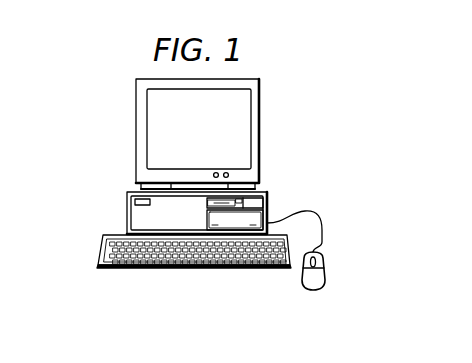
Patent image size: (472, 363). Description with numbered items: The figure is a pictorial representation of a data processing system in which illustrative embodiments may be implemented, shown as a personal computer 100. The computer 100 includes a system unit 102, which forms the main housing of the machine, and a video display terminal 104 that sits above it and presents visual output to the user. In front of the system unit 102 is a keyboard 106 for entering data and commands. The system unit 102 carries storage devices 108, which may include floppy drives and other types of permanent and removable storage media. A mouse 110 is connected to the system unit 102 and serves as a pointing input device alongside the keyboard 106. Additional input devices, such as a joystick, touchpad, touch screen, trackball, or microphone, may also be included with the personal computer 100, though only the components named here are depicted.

The computer 100 is at (82, 120).
The system unit 102 is at (127, 210).
The video display terminal 104 is at (260, 128).
The keyboard 106 is at (120, 268).
The storage devices 108 is at (268, 210).
The mouse 110 is at (313, 291).